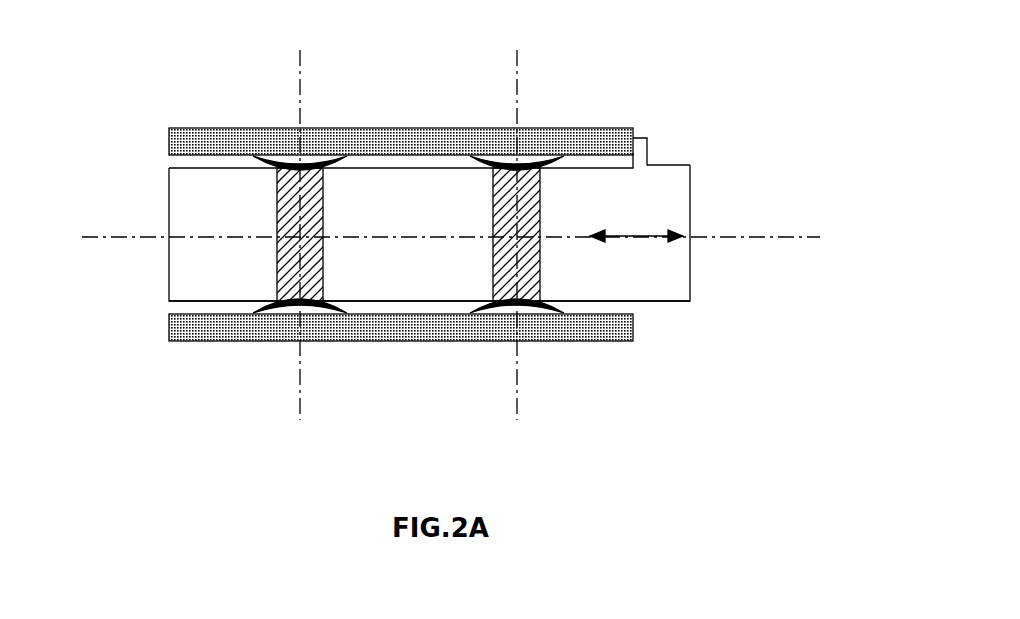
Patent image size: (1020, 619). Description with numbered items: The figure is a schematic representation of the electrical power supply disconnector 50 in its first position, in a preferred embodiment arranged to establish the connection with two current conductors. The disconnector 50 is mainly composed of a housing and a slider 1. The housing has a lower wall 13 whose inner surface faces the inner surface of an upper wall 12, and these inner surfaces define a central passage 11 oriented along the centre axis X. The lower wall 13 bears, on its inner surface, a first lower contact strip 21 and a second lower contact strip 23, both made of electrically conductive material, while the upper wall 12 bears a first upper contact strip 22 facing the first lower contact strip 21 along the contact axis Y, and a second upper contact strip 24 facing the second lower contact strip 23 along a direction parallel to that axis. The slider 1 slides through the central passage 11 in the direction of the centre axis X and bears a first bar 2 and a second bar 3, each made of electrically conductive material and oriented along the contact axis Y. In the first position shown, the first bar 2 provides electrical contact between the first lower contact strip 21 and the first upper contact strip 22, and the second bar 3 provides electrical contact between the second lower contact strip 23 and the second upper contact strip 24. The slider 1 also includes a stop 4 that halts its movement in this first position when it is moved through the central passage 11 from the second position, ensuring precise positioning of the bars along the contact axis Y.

The electrical power supply disconnector 50 is at (133, 90).
The slider 1 is at (645, 225).
The first bar 2 is at (279, 267).
The second bar 3 is at (524, 258).
The stop 4 is at (644, 155).
The central passage 11 is at (632, 308).
The upper wall 12 is at (395, 128).
The lower wall 13 is at (385, 326).
The first lower contact strip 21 is at (253, 310).
The first upper contact strip 22 is at (250, 165).
The second lower contact strip 23 is at (560, 307).
The second upper contact strip 24 is at (560, 157).